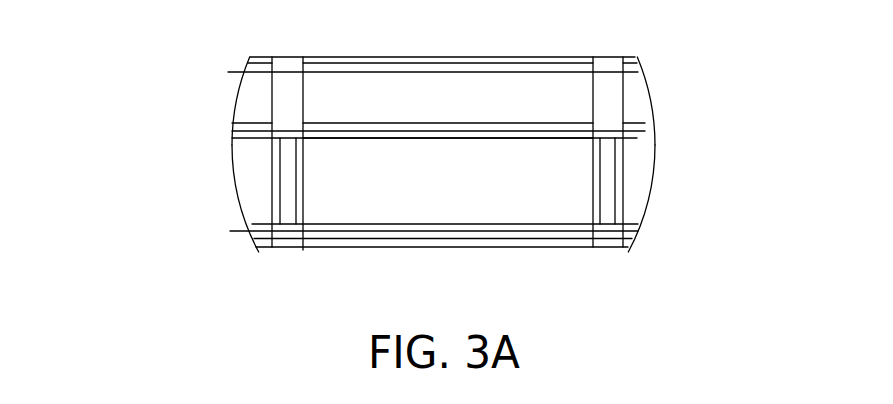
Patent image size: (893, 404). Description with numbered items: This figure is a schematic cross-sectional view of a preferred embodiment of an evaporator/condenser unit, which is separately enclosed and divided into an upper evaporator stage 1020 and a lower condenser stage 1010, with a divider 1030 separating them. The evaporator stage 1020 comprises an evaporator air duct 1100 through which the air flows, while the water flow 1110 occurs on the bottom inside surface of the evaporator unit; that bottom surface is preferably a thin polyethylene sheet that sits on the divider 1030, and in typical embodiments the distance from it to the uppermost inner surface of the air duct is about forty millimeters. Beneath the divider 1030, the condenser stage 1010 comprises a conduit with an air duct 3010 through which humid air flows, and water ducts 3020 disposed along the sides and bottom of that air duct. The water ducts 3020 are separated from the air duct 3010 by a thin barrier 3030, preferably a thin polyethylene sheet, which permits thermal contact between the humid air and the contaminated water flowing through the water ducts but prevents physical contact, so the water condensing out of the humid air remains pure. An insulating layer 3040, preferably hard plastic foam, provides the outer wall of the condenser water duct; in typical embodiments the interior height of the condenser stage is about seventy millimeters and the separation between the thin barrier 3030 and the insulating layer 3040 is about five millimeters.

The condenser stage 1010 is at (240, 200).
The evaporator stage 1020 is at (242, 108).
The divider 1030 is at (645, 131).
The evaporator air duct 1100 is at (460, 92).
The water flow 1110 is at (457, 127).
The air duct 3010 is at (471, 173).
The water ducts 3020 is at (298, 177).
The thin barrier 3030 is at (302, 190).
The insulating layer 3040 is at (610, 168).